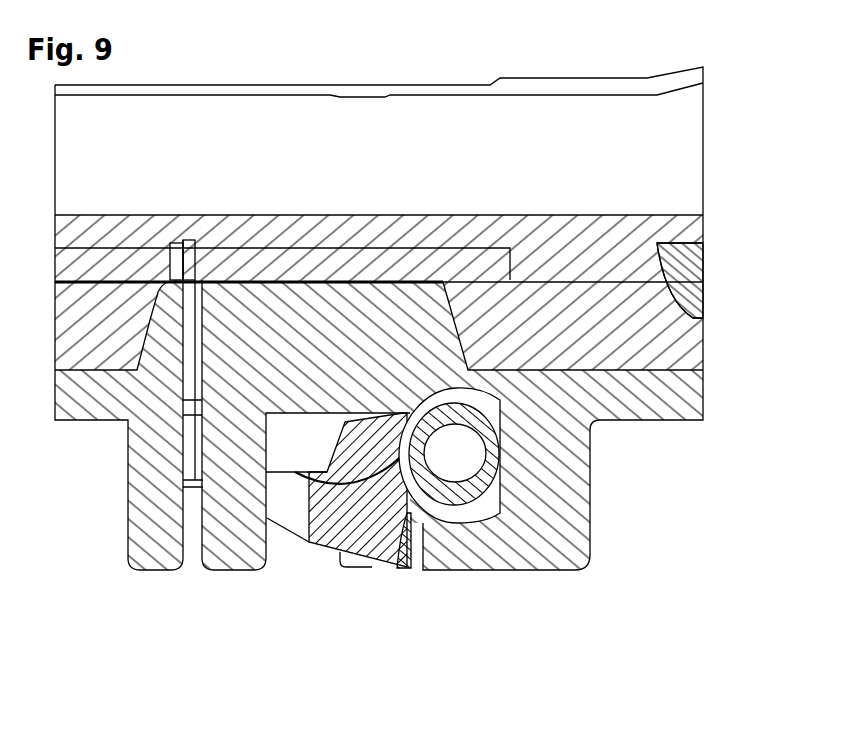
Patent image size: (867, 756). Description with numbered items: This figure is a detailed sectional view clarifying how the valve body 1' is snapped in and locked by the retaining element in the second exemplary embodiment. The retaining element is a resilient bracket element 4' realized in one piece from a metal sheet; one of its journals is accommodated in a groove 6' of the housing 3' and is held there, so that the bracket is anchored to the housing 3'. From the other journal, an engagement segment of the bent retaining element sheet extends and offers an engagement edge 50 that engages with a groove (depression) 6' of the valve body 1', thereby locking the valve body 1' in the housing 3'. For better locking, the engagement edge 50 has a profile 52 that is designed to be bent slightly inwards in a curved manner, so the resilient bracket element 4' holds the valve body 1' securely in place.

The housing 3' is at (362, 318).
The valve body 1' is at (566, 459).
The resilient bracket element 4' is at (358, 545).
The groove 6' is at (454, 543).
The engagement edge 50 is at (392, 570).
The profile 52 is at (347, 483).